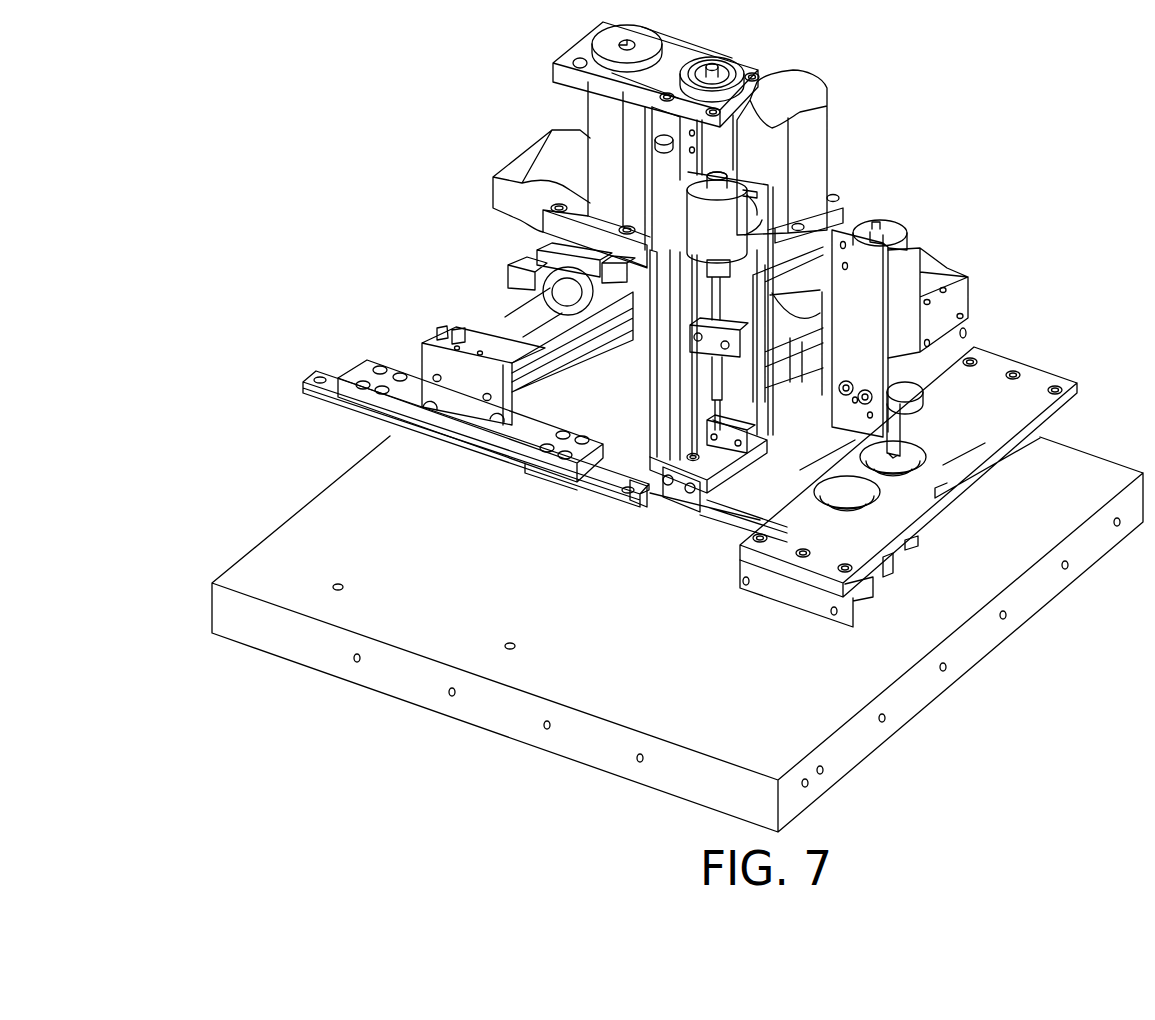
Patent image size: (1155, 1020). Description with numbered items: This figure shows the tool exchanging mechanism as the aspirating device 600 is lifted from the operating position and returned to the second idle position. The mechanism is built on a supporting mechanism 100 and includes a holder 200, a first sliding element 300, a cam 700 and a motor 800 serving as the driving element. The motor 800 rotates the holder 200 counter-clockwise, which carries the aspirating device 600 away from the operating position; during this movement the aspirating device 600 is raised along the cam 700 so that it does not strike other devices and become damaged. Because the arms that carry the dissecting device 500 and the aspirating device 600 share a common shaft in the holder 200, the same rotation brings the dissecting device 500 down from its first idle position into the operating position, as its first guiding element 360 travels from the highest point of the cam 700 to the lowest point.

The supporting mechanism 100 is at (873, 247).
The holder 200 is at (790, 300).
The first sliding element 300 is at (805, 318).
The first guiding element 360 is at (822, 318).
The dissecting device 500 is at (903, 352).
The aspirating device 600 is at (705, 218).
The cam 700 is at (793, 300).
The motor 800 is at (758, 152).